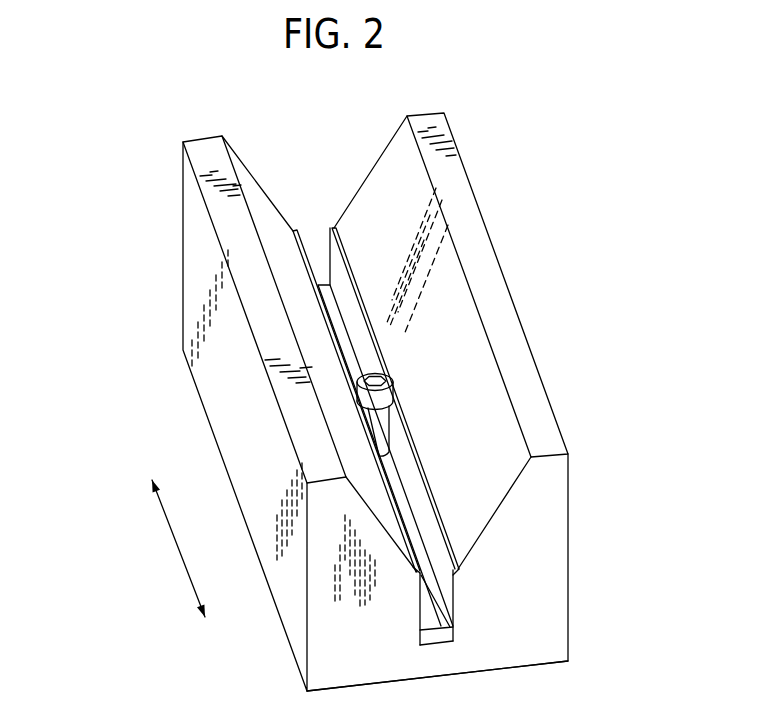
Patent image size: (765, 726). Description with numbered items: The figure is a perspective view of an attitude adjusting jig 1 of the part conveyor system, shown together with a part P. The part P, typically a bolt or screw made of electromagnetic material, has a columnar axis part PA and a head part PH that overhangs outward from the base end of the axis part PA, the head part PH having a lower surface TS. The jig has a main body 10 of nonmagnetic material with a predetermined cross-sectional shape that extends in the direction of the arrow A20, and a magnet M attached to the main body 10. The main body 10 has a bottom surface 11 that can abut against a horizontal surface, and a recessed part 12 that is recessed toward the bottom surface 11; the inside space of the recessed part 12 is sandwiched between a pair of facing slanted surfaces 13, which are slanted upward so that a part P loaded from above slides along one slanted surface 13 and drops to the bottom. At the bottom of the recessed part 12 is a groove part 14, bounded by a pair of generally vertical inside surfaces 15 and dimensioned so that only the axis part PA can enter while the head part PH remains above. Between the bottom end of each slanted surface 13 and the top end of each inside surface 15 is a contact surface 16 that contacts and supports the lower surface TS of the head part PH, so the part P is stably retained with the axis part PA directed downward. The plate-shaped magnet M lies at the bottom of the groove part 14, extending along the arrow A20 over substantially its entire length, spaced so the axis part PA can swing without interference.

The attitude adjusting jig 1 is at (106, 162).
The main body 10 is at (538, 548).
The bottom surface 11 is at (545, 672).
The recessed part 12 is at (356, 143).
The slanted surfaces 13 is at (383, 211).
The groove part 14 is at (400, 466).
The inside surfaces 15 is at (427, 603).
The contact surface 16 is at (442, 535).
The part P is at (463, 322).
The head part PH is at (386, 397).
The axis part PA is at (383, 424).
The lower surface TS is at (365, 427).
The magnet M is at (440, 637).
The arrow A20 is at (173, 545).